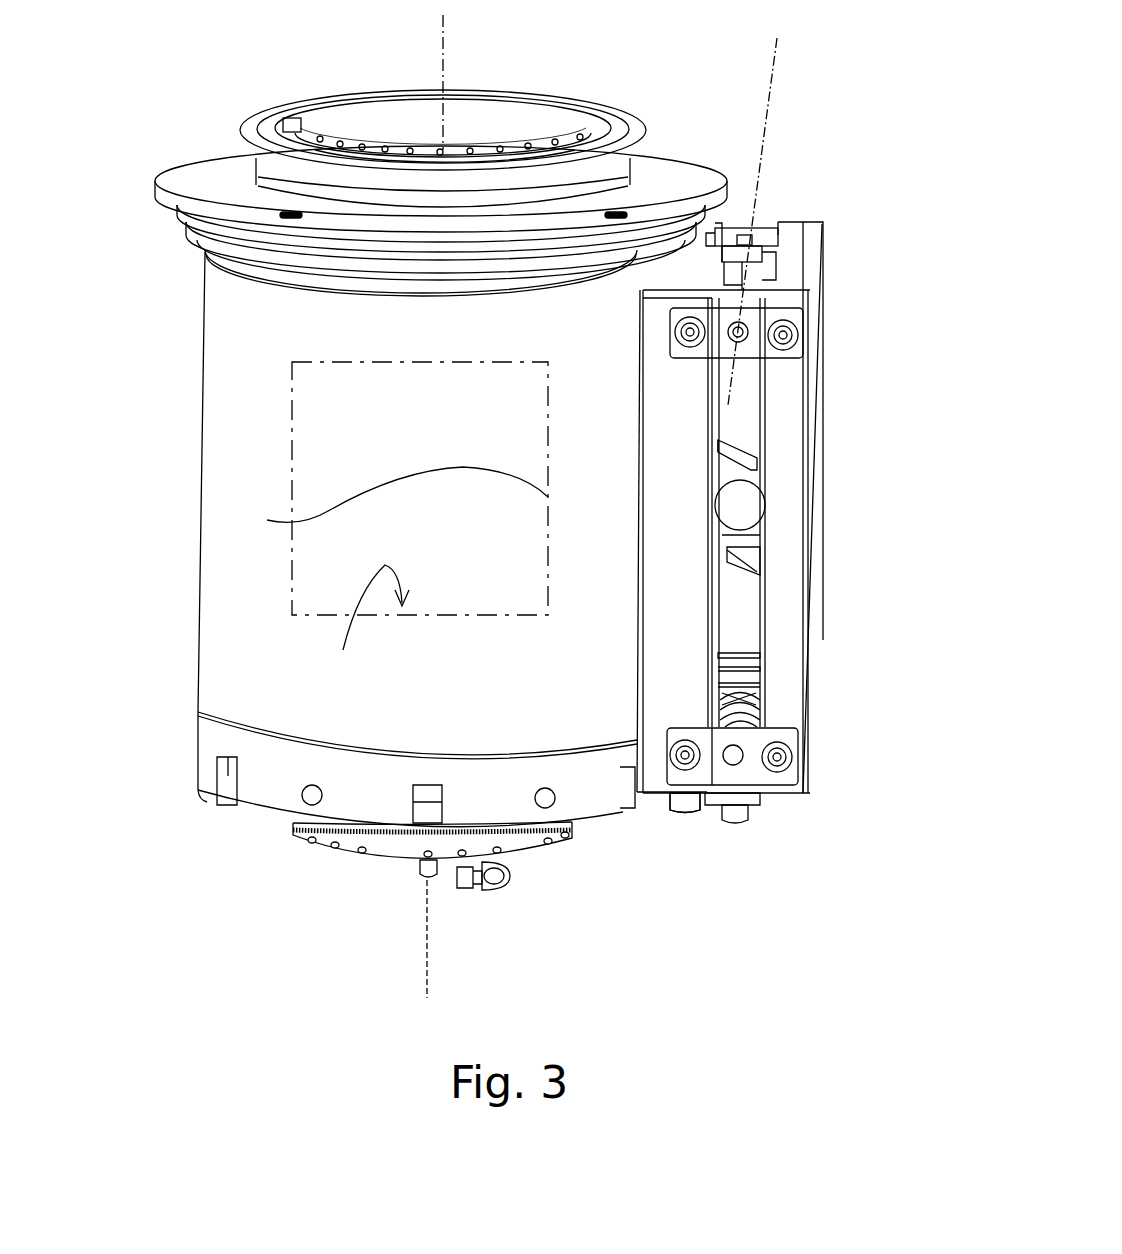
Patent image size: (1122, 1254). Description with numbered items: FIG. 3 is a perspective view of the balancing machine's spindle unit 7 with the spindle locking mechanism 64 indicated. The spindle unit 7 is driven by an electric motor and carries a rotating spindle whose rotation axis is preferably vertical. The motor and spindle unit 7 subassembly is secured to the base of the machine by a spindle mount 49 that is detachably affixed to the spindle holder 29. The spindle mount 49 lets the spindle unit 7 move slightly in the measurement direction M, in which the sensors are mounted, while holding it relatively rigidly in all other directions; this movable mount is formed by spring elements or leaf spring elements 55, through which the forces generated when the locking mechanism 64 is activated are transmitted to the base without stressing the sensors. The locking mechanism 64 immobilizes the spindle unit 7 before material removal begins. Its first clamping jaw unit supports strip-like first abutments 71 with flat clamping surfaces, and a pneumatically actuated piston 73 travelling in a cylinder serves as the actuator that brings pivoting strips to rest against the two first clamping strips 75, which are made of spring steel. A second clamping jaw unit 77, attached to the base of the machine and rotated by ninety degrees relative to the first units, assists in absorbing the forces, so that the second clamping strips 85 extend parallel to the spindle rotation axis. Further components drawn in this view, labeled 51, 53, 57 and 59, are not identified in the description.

The spindle unit 7 is at (188, 468).
The spindle holder 29 is at (273, 636).
The spindle mount 49 is at (862, 233).
The mount bracket 51 is at (787, 537).
The base ring 53 is at (662, 635).
The leaf spring elements 55 is at (800, 312).
The spring 57 is at (758, 697).
The nut / adjustment block 59 is at (752, 232).
The spindle locking mechanism 64 is at (343, 650).
The first abutments 71 is at (715, 810).
The piston 73 is at (804, 492).
The first clamping strips 75 is at (497, 367).
The second clamping jaw unit 77 is at (738, 458).
The second clamping strips 85 is at (290, 400).
The measurement direction M is at (774, 53).